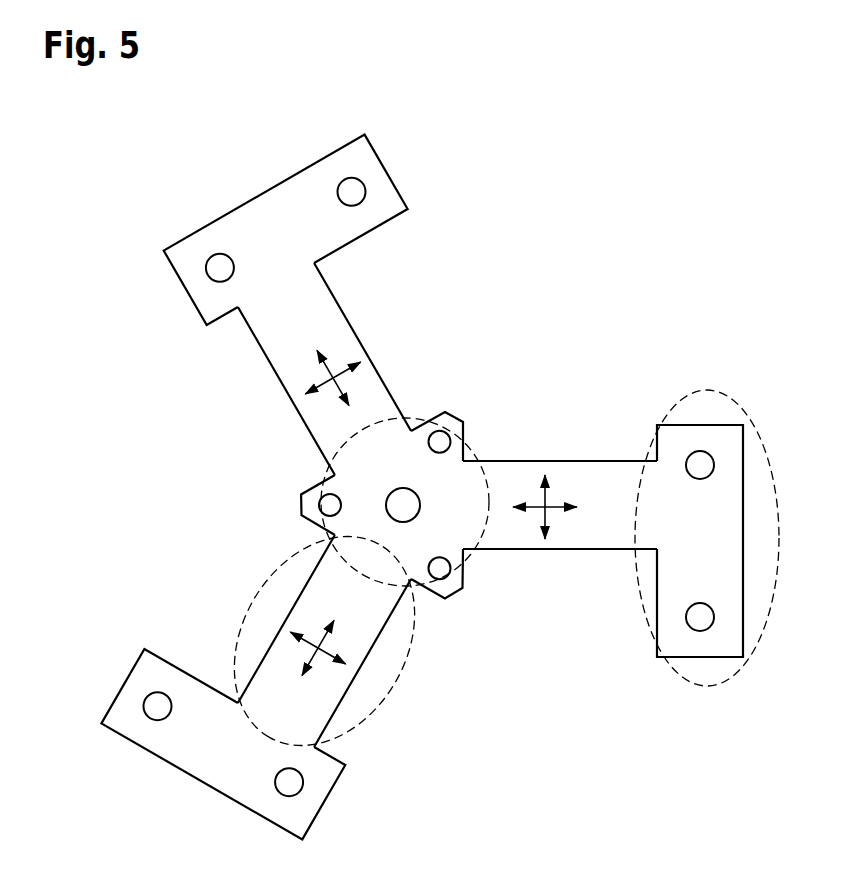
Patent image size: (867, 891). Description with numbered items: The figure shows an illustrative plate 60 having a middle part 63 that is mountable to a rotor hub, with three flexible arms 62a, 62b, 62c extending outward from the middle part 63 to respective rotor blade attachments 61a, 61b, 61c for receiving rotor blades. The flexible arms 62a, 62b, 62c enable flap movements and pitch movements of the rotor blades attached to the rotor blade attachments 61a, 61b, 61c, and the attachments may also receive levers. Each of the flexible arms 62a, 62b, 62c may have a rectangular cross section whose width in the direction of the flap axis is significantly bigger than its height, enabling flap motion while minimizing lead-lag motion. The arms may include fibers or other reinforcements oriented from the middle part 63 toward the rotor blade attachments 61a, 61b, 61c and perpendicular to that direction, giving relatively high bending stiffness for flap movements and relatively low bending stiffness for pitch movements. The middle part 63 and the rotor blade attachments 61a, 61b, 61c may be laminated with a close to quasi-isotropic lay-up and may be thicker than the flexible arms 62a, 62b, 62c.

The plate 60 is at (537, 190).
The rotor blade attachment 61a is at (303, 808).
The rotor blade attachment 61b is at (704, 390).
The rotor blade attachment 61c is at (238, 227).
The flexible arm 62a is at (410, 656).
The flexible arm 62b is at (560, 534).
The flexible arm 62c is at (340, 338).
The middle part 63 is at (350, 434).